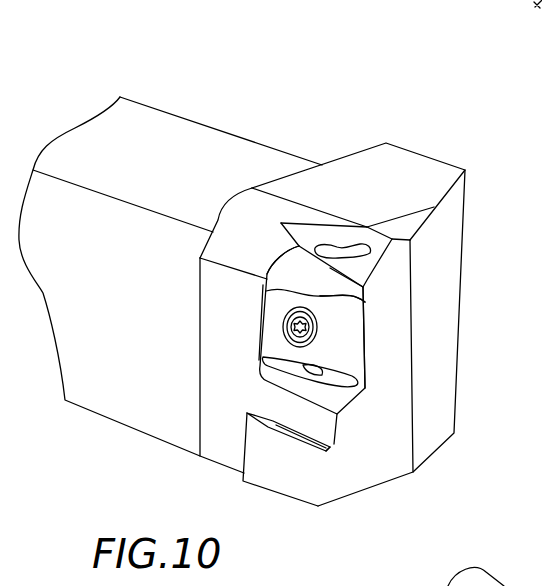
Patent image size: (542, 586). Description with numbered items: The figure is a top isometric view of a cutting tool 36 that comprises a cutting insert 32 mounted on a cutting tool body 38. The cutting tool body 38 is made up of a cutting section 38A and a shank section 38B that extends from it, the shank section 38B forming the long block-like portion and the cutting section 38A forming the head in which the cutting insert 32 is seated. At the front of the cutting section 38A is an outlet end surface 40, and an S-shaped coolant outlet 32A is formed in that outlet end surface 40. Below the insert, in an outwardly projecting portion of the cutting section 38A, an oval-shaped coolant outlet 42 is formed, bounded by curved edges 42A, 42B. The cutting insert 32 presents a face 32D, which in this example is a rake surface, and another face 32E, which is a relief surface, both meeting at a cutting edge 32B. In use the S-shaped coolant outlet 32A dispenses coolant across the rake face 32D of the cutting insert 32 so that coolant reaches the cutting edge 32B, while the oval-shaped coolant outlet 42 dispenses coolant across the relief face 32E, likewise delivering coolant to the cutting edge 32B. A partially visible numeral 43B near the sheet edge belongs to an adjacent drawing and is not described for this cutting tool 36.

The cutting tool 36 is at (254, 79).
The cutting tool body 38 is at (320, 134).
The cutting section 38A is at (181, 93).
The shank section 38B is at (418, 126).
The outlet end surface 40 is at (333, 237).
The cutting insert 32 is at (276, 323).
The S-shaped coolant outlet 32A is at (368, 266).
The cutting edge 32B is at (361, 364).
The face 32D is at (272, 259).
The face 32E is at (346, 314).
The oval-shaped coolant outlet 42 is at (291, 450).
The curved edge 42A is at (263, 411).
The curved edge 42B is at (343, 445).
The adjacent figure element 43B is at (478, 578).